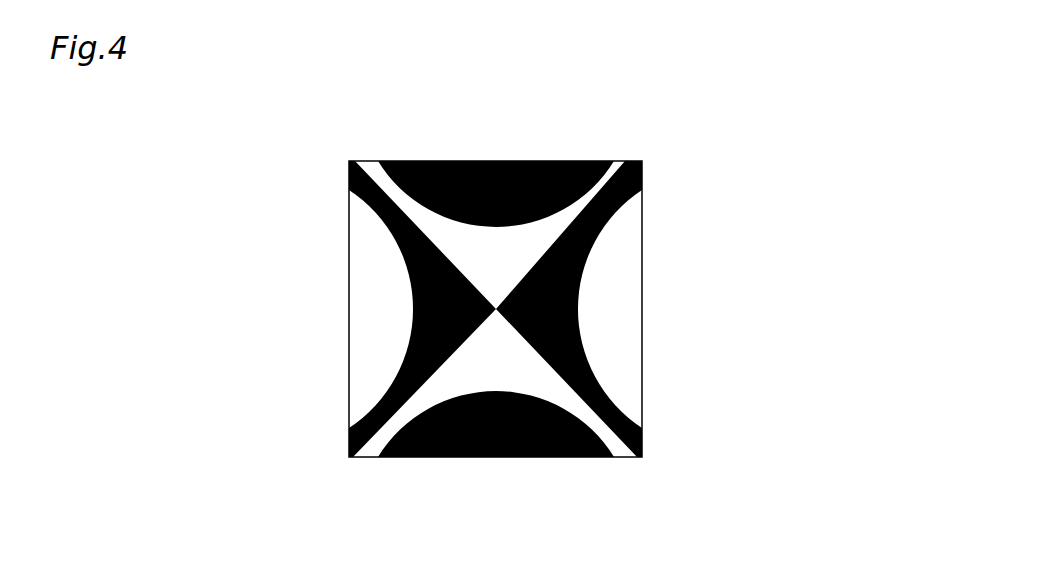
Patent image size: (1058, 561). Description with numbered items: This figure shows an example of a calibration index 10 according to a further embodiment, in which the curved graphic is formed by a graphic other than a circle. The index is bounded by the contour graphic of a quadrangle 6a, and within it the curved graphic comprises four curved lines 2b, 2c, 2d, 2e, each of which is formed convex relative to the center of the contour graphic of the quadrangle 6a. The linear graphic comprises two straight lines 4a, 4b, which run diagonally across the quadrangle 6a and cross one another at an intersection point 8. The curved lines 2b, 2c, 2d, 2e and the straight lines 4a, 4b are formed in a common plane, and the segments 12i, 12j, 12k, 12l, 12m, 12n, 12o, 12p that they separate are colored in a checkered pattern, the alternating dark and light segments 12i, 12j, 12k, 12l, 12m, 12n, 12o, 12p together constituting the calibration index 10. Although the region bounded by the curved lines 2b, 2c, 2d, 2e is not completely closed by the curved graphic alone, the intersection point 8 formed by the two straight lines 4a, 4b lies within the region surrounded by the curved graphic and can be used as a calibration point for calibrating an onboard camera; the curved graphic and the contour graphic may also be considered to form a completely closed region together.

The calibration index 10 is at (686, 100).
The segment 12k is at (467, 161).
The curved line 2b is at (609, 173).
The segment 12l is at (365, 160).
The curved line 2c is at (617, 209).
The curved line 2e is at (368, 237).
The segment 12m is at (628, 255).
The quadrangle 6a is at (642, 292).
The segment 12j is at (410, 296).
The segment 12i is at (372, 341).
The curved line 2d is at (582, 422).
The segment 12n is at (620, 437).
The straight line 4b is at (372, 444).
The segment 12p is at (433, 392).
The segment 12o is at (497, 311).
The intersection point 8 is at (535, 458).
The straight line 4a is at (625, 437).